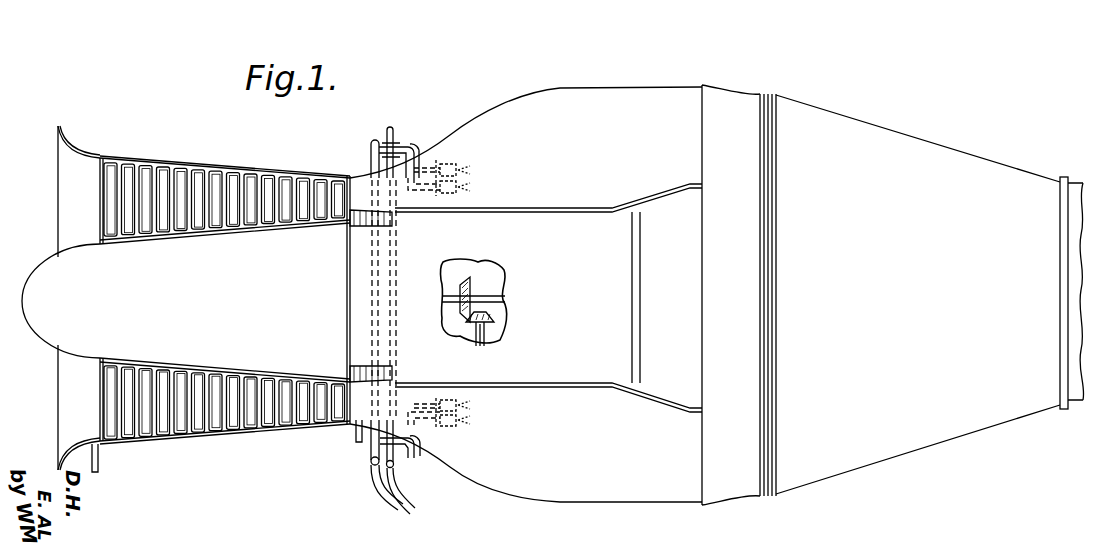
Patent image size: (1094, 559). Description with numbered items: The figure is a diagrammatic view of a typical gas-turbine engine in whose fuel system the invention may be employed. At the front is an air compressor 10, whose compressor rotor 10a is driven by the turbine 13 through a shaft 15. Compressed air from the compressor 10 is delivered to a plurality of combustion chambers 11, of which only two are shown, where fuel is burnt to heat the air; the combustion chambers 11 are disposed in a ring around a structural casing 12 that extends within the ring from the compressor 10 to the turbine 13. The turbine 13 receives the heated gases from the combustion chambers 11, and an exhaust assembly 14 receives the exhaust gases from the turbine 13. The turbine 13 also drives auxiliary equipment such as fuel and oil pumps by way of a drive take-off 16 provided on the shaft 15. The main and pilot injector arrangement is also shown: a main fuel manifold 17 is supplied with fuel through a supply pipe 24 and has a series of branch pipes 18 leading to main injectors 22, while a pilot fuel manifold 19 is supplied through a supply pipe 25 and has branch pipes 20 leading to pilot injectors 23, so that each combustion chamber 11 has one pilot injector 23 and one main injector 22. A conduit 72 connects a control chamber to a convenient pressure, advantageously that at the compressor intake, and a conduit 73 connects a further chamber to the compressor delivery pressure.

The air compressor 10 is at (207, 163).
The compressor rotor 10a is at (258, 309).
The combustion chambers 11 is at (526, 108).
The structural casing 12 is at (604, 309).
The turbine 13 is at (733, 106).
The exhaust assembly 14 is at (952, 157).
The shaft 15 is at (486, 296).
The drive take-off 16 is at (486, 333).
The main fuel manifold 17 is at (369, 159).
The branch pipes 18 is at (402, 146).
The pilot fuel manifold 19 is at (386, 132).
The branch pipes 20 is at (420, 150).
The main injectors 22 is at (470, 408).
The pilot injectors 23 is at (456, 160).
The supply pipe 24 is at (372, 466).
The supply pipe 25 is at (396, 488).
The conduit 72 is at (100, 466).
The conduit 73 is at (352, 432).